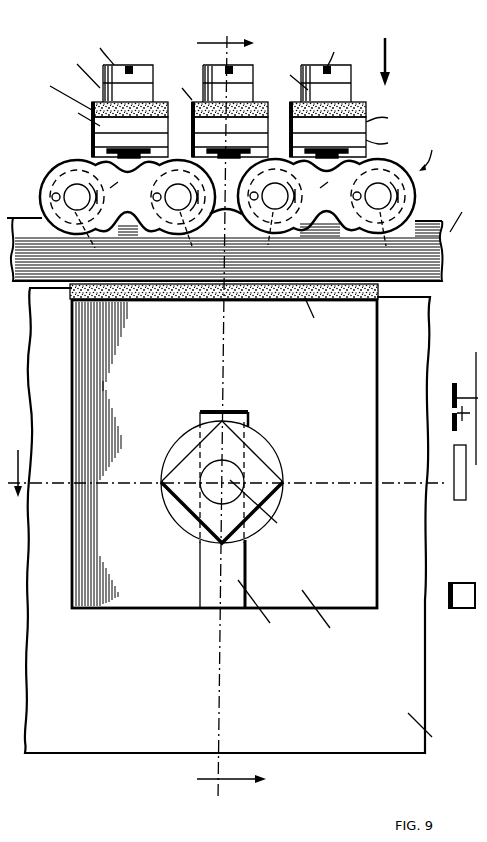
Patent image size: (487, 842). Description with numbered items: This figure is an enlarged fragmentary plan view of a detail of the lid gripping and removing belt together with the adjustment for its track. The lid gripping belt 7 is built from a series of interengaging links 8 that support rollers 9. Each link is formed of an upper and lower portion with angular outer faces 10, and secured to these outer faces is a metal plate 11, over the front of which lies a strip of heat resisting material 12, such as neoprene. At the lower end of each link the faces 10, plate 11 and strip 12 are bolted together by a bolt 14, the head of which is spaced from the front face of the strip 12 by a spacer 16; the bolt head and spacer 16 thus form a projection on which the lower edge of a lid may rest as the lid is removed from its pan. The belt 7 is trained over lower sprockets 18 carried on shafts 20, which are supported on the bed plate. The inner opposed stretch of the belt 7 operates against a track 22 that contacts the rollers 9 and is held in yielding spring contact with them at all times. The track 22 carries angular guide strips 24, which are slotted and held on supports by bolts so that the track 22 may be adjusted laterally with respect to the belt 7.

The lid gripping belt 7 is at (418, 104).
The interengaging links 8 is at (227, 208).
The rollers 9 is at (227, 218).
The angular outer faces 10 is at (207, 417).
The metal plate 11 is at (193, 128).
The strip of heat resisting material 12 is at (197, 81).
The bolt 14 is at (215, 48).
The spacer 16 is at (200, 66).
The lower sprockets 18 is at (237, 510).
The shafts 20 is at (251, 535).
The tracks 22 is at (243, 423).
The angular guide strips 24 is at (224, 484).